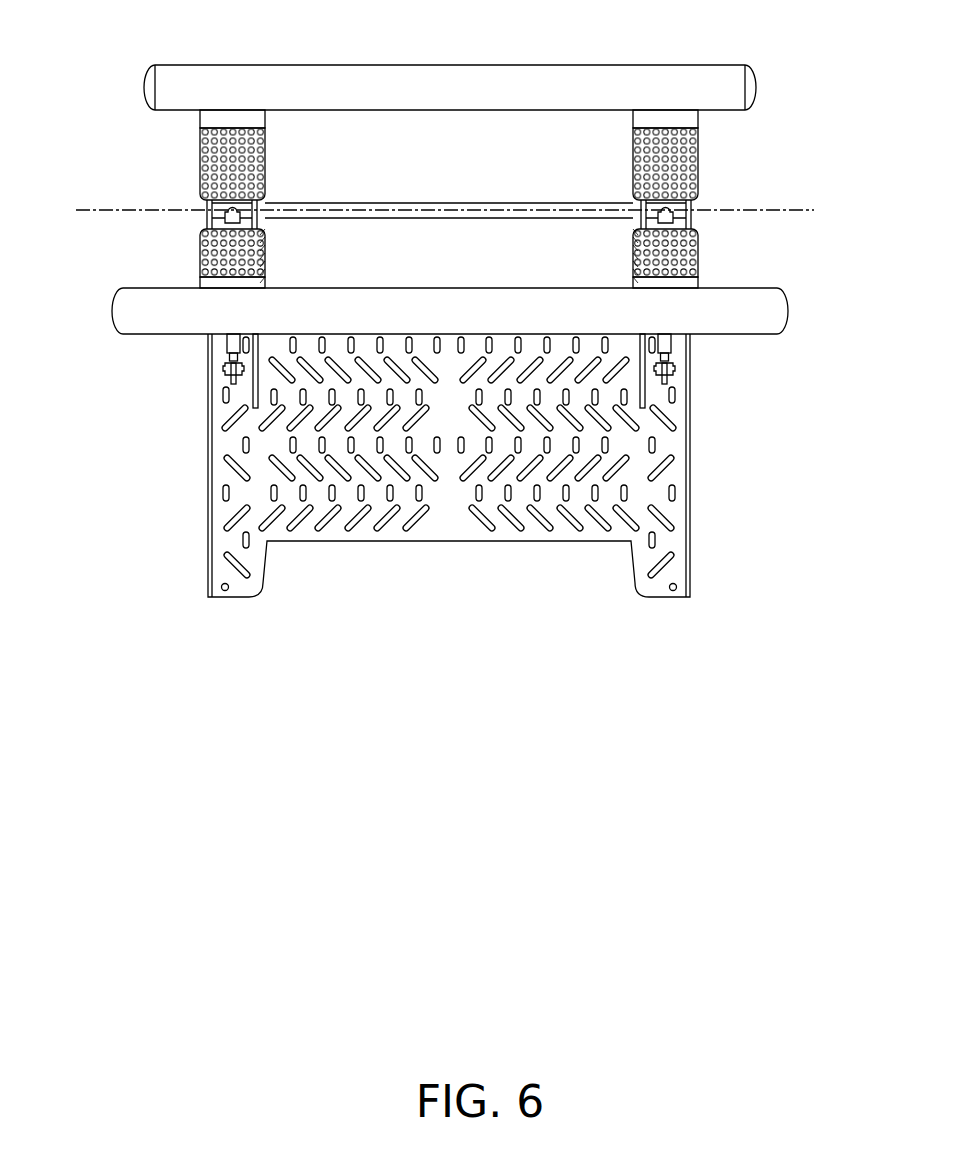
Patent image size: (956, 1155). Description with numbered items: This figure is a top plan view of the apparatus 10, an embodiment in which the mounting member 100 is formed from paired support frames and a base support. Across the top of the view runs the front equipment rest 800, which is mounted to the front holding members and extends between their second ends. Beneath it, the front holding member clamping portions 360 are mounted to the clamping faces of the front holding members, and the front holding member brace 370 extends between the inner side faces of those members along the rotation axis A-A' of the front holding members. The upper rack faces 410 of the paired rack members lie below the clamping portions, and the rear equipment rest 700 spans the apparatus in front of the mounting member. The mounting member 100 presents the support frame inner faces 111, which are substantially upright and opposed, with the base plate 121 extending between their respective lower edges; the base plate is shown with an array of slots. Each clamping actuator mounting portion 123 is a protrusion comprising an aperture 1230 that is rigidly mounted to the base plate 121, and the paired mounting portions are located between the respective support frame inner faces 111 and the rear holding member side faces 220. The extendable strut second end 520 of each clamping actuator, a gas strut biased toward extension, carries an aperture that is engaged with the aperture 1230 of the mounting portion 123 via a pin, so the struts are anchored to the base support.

The apparatus 10 is at (120, 111).
The front equipment rest 800 is at (468, 72).
The front holding member clamping portion 360 is at (200, 150).
The front holding member brace 370 is at (484, 204).
The upper rack face 410 is at (200, 250).
The rear equipment rest 700 is at (770, 315).
The mounting member 100 is at (194, 603).
The support frame inner face 111 is at (209, 527).
The extendable strut second end 520 is at (225, 360).
The aperture 1230 is at (226, 372).
The clamping actuator mounting portion 123 is at (223, 397).
The rear holding member side face 220 is at (234, 420).
The base plate 121 is at (406, 520).